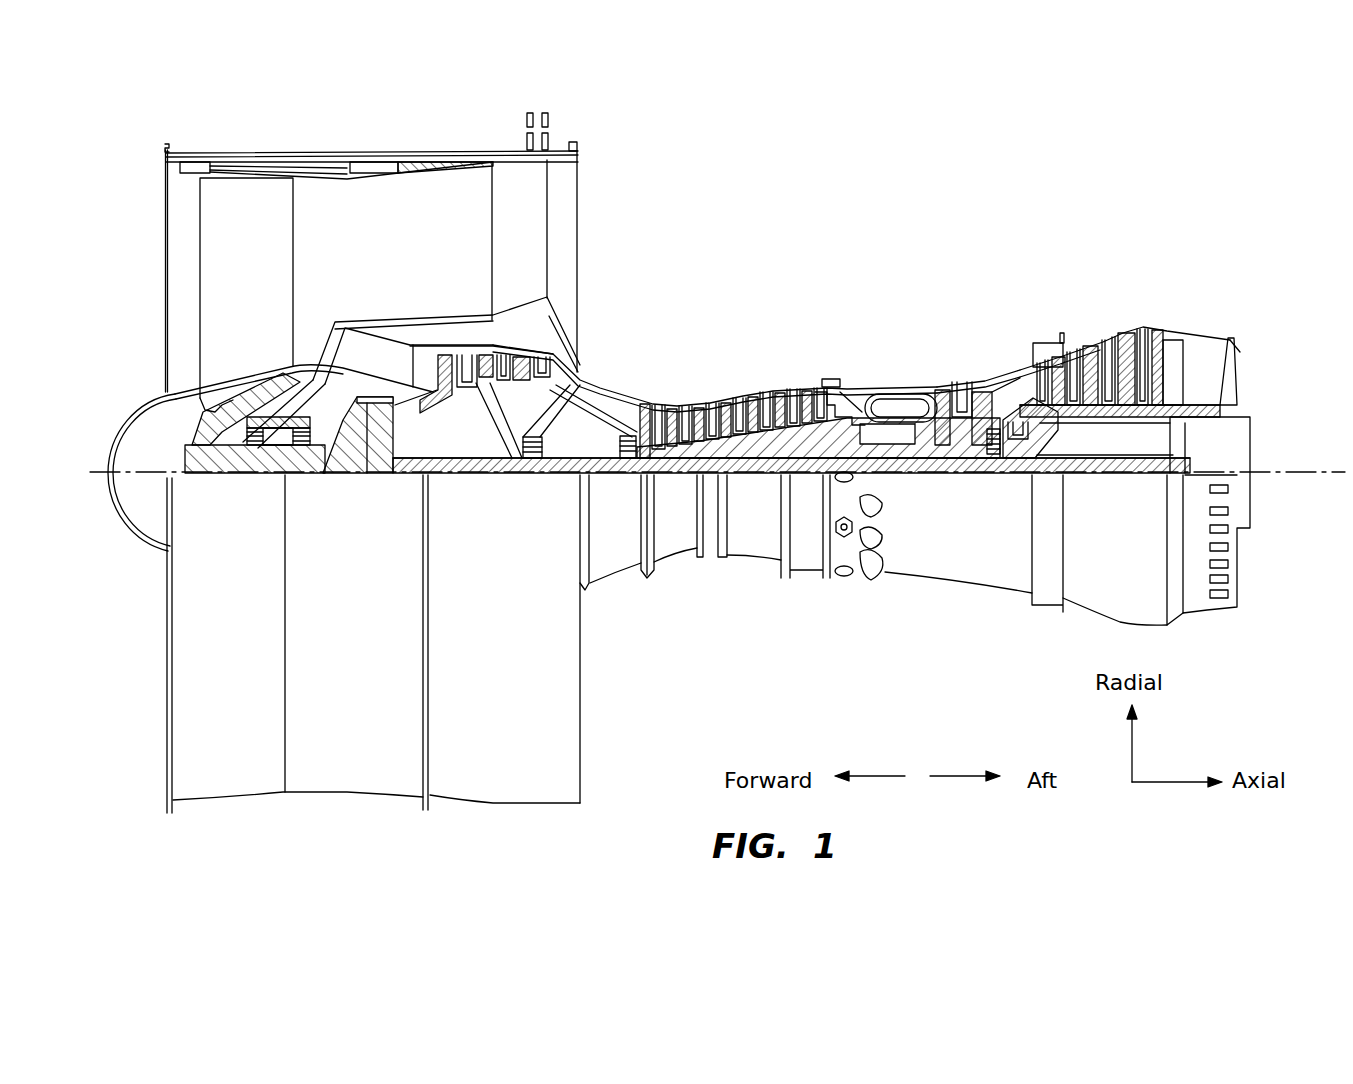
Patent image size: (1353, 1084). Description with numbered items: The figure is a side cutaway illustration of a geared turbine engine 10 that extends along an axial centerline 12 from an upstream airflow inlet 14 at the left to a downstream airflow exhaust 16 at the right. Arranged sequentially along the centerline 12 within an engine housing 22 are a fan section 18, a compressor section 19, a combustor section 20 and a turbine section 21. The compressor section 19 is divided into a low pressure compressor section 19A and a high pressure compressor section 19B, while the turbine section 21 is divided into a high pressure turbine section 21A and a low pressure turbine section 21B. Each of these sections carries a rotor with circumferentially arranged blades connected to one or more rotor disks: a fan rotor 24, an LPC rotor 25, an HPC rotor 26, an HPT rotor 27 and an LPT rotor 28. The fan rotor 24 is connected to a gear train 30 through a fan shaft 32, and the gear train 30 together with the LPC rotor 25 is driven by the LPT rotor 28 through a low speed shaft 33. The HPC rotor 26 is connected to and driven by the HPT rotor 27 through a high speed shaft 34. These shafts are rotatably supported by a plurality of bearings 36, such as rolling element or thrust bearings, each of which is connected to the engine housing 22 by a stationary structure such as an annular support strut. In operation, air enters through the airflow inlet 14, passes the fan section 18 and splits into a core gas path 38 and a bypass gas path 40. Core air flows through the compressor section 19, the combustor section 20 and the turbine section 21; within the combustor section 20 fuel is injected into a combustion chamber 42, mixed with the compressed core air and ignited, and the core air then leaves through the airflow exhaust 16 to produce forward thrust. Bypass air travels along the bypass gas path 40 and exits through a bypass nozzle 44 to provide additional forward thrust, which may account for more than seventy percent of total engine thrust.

The geared turbine engine 10 is at (135, 132).
The axial centerline 12 is at (1293, 485).
The airflow inlet 14 is at (167, 229).
The airflow exhaust 16 is at (1240, 375).
The fan section 18 is at (338, 128).
The compressor section 19 is at (803, 60).
The low pressure compressor (LPC) section 19A is at (580, 108).
The high pressure compressor (HPC) section 19B is at (800, 305).
The combustor section 20 is at (928, 305).
The turbine section 21 is at (1195, 233).
The high pressure turbine (HPT) section 21A is at (1010, 305).
The low pressure turbine (LPT) section 21B is at (1195, 305).
The engine housing 22 is at (600, 588).
The fan rotor 24 is at (168, 388).
The LPC rotor 25 is at (488, 425).
The HPC rotor 26 is at (752, 447).
The HPT rotor 27 is at (965, 478).
The LPT rotor 28 is at (1108, 434).
The gear train 30 is at (378, 478).
The fan shaft 32 is at (238, 478).
The low speed shaft 33 is at (800, 478).
The high speed shaft 34 is at (897, 447).
The bearings 36 is at (280, 447).
The core gas path 38 is at (600, 398).
The bypass gas path 40 is at (424, 246).
The combustion chamber 42 is at (885, 405).
The bypass nozzle 44 is at (580, 210).